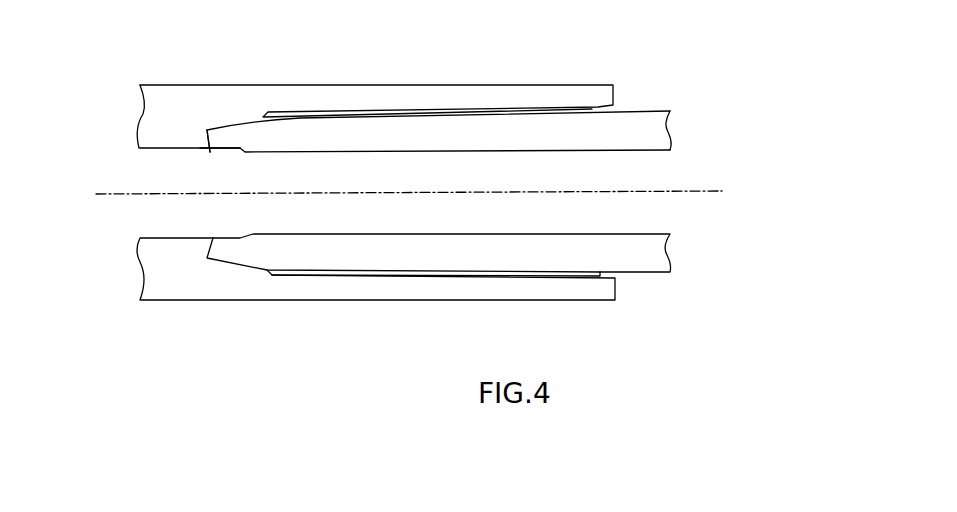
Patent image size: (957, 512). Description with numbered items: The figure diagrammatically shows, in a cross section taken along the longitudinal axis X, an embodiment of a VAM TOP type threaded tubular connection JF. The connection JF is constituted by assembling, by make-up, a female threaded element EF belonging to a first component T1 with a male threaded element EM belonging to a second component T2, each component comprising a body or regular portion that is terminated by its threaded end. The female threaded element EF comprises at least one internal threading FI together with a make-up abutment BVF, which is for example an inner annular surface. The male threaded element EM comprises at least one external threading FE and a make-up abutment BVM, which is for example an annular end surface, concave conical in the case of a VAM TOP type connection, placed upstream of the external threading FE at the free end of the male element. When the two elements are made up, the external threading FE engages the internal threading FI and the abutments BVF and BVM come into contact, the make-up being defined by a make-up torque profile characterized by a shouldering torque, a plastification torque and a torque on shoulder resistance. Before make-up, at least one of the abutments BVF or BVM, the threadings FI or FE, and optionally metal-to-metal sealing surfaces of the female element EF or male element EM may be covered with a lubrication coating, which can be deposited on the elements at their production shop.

The threaded tubular connection JF is at (421, 113).
The female threaded element EF is at (420, 85).
The male threaded element EM is at (323, 153).
The internal threading FI is at (511, 103).
The make-up abutment of the male element BVM is at (211, 132).
The make-up abutment of the female element BVF is at (205, 137).
The longitudinal axis X is at (405, 194).
The first component T1 is at (136, 270).
The second component T2 is at (683, 251).
The external threading FE is at (313, 277).